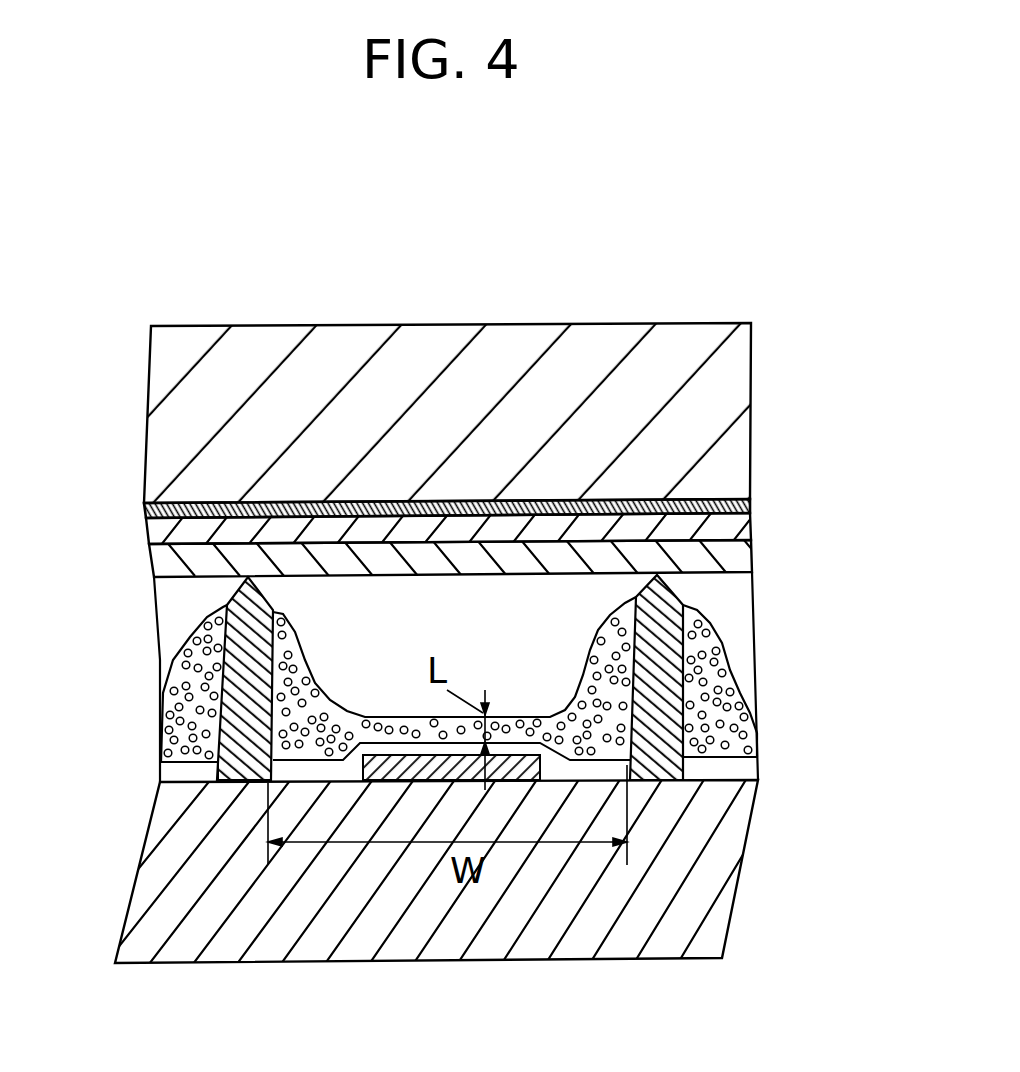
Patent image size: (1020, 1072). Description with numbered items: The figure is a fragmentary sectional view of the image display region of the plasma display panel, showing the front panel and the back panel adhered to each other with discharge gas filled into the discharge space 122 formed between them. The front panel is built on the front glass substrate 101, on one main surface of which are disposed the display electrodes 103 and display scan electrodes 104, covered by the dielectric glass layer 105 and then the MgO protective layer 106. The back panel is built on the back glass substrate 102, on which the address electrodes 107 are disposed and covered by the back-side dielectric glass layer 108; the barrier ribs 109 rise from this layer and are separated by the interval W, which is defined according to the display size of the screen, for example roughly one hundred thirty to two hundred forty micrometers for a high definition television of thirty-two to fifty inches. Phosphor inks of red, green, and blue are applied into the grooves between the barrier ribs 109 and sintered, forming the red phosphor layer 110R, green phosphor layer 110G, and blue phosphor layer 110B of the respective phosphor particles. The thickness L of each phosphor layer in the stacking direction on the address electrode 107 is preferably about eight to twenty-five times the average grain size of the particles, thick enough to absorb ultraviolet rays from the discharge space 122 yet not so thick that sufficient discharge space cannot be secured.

The front glass substrate 101 is at (735, 400).
The back glass substrate 102 is at (728, 862).
The display electrodes 103 is at (750, 501).
The display scan electrodes 104 is at (529, 493).
The dielectric glass layer 105 is at (753, 528).
The MgO protective layer 106 is at (753, 557).
The address electrodes 107 is at (373, 780).
The back-side dielectric glass layer 108 is at (187, 772).
The barrier ribs 109 is at (640, 593).
The red phosphor layer 110R is at (167, 690).
The green phosphor layer 110G is at (565, 804).
The blue phosphor layer 110B is at (743, 720).
The discharge space 122 is at (572, 638).